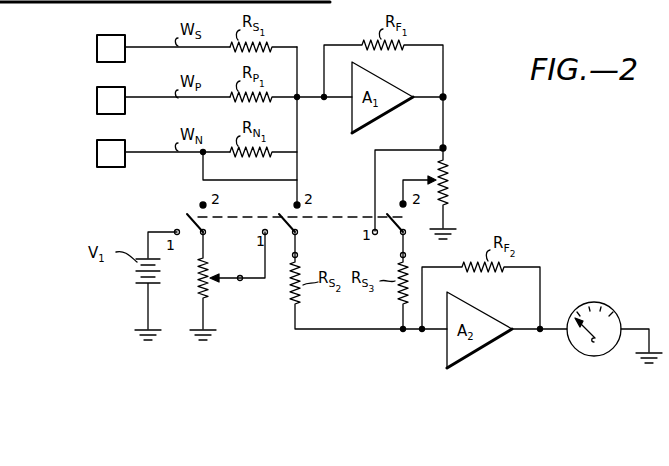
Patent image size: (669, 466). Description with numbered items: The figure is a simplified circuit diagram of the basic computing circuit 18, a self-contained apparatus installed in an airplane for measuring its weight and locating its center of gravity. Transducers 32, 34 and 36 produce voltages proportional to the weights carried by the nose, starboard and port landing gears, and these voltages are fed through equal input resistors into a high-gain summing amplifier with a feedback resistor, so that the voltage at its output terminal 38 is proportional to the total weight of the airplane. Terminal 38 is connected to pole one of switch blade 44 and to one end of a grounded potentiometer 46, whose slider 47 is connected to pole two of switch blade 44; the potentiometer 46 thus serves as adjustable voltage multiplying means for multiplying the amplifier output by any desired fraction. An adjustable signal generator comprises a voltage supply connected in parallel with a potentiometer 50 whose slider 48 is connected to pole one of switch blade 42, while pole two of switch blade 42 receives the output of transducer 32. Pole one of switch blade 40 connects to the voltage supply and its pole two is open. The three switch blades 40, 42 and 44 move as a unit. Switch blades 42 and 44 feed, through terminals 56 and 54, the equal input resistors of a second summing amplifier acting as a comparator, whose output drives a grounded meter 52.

The basic computing circuit 18 is at (460, 118).
The transducer 32 is at (125, 146).
The transducer 34 is at (125, 92).
The transducer 36 is at (125, 40).
The terminal 38 is at (447, 93).
The switch blade 40 is at (190, 221).
The switch blade 42 is at (299, 223).
The switch blade 44 is at (407, 223).
The potentiometer 46 is at (449, 170).
The slider 47 is at (410, 178).
The slider 48 is at (237, 275).
The potentiometer 50 is at (210, 290).
The meter 52 is at (594, 303).
The terminal 54 is at (398, 254).
The terminal 56 is at (300, 253).